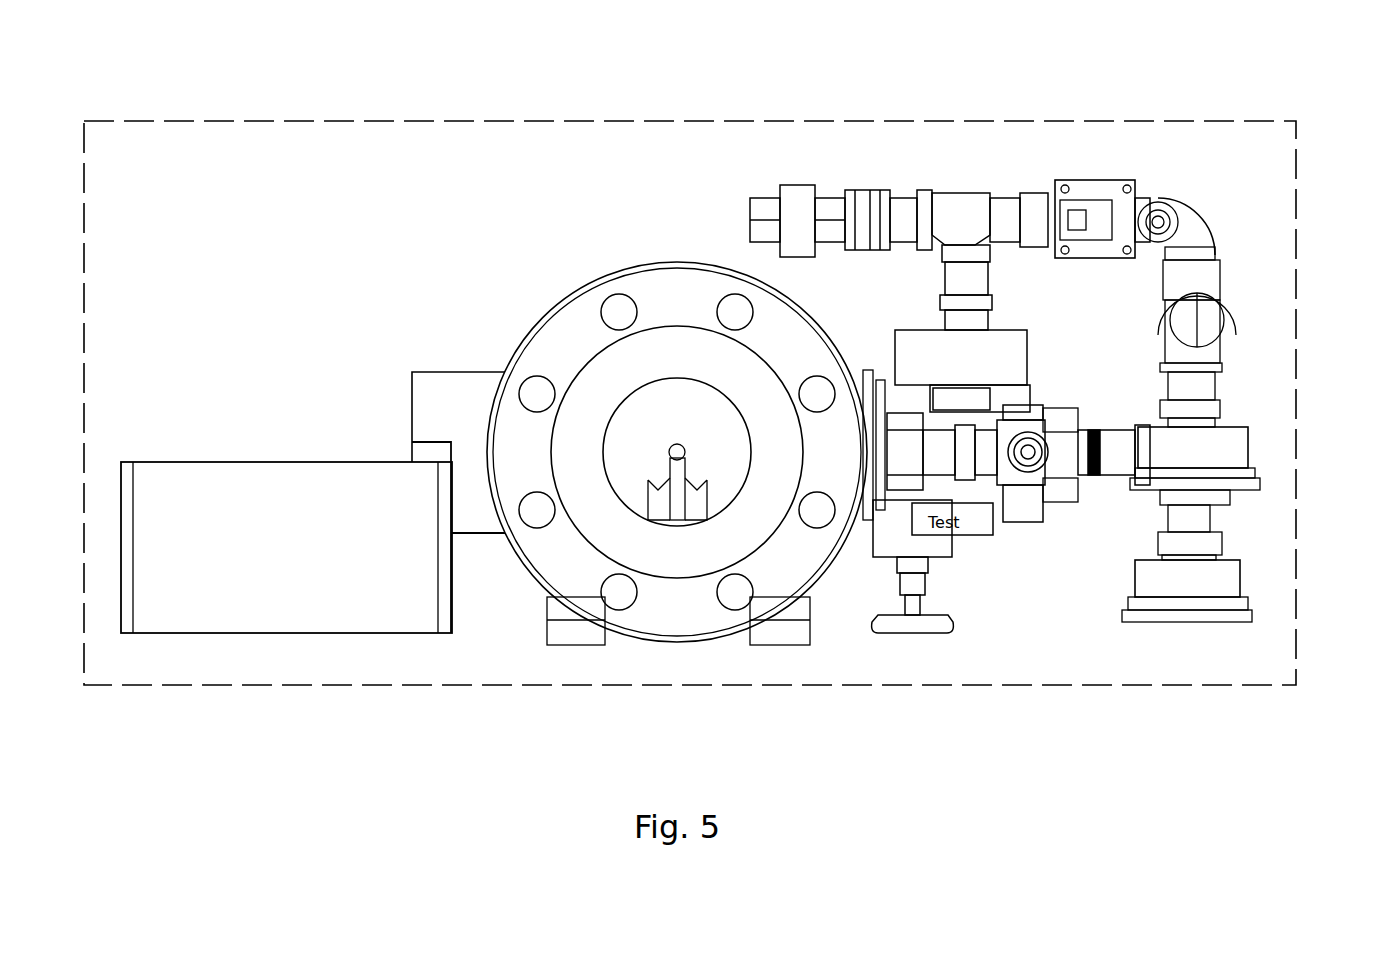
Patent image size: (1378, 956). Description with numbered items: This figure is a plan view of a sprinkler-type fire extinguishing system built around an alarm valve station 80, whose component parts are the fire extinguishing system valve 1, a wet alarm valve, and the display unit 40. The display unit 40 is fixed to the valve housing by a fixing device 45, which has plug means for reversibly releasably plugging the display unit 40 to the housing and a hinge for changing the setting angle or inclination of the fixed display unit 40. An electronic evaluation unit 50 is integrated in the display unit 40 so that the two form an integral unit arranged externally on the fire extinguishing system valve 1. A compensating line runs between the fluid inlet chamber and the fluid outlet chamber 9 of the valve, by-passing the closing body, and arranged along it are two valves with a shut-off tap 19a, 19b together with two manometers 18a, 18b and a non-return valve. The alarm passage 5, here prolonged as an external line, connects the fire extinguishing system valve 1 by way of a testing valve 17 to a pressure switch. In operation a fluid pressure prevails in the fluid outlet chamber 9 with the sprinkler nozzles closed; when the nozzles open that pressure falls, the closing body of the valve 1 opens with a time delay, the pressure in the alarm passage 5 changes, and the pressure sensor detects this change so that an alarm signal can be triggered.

The alarm valve station 80 is at (227, 121).
The fire extinguishing system valve 1 is at (534, 314).
The fluid outlet chamber 9 is at (714, 480).
The display unit 40 is at (313, 498).
The electronic evaluation unit 50 is at (243, 492).
The fixing device 45 is at (467, 513).
The testing valve 17 is at (1075, 176).
The alarm passage 5 is at (1188, 237).
The manometer 18a is at (1178, 582).
The manometer 18b is at (1245, 440).
The shut-off tap 19a is at (1034, 510).
The shut-off tap 19b is at (1063, 502).